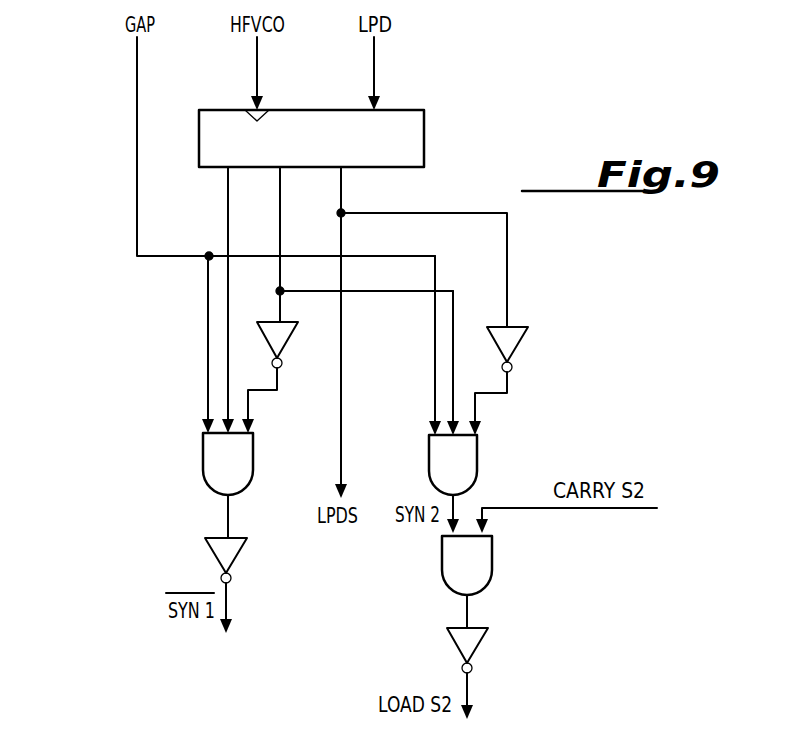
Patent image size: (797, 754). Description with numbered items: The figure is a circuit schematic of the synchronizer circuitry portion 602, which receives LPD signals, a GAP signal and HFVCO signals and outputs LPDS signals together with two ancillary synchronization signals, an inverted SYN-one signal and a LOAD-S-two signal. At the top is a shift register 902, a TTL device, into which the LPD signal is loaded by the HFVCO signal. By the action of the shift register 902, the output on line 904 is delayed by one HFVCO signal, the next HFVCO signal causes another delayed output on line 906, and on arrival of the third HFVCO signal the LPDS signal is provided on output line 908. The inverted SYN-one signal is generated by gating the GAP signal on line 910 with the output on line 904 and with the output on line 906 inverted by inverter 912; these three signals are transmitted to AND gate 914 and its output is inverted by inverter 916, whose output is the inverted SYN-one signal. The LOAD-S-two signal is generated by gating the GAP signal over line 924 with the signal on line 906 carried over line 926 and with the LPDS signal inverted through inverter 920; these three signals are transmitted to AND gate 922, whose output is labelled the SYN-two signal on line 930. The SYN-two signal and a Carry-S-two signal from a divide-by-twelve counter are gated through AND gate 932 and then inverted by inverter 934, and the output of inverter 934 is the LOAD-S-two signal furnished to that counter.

The synchronizer circuitry portion 602 is at (231, 148).
The shift register 902 is at (410, 140).
The line 904 is at (227, 199).
The line 906 is at (282, 196).
The output line 908 is at (343, 189).
The line 910 is at (207, 335).
The inverter 912 is at (285, 332).
The AND gate 914 is at (213, 456).
The inverter 916 is at (218, 545).
The inverter 920 is at (514, 332).
The AND gate 922 is at (487, 448).
The line 924 is at (437, 330).
The line 926 is at (456, 315).
The line 930 is at (456, 505).
The AND gate 932 is at (477, 570).
The inverter 934 is at (478, 642).